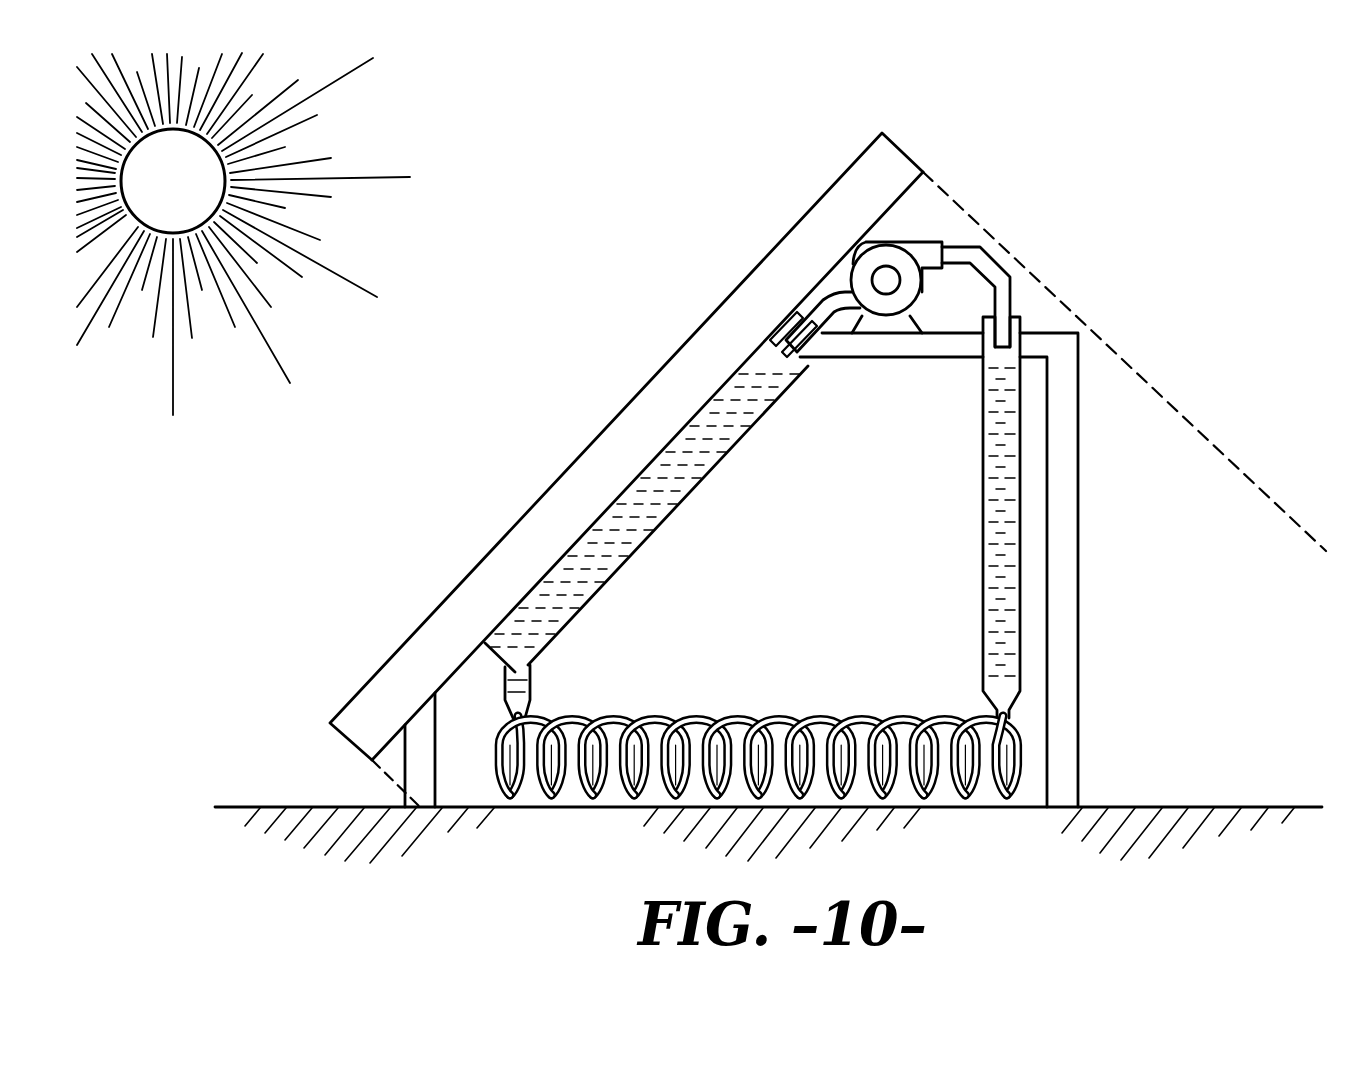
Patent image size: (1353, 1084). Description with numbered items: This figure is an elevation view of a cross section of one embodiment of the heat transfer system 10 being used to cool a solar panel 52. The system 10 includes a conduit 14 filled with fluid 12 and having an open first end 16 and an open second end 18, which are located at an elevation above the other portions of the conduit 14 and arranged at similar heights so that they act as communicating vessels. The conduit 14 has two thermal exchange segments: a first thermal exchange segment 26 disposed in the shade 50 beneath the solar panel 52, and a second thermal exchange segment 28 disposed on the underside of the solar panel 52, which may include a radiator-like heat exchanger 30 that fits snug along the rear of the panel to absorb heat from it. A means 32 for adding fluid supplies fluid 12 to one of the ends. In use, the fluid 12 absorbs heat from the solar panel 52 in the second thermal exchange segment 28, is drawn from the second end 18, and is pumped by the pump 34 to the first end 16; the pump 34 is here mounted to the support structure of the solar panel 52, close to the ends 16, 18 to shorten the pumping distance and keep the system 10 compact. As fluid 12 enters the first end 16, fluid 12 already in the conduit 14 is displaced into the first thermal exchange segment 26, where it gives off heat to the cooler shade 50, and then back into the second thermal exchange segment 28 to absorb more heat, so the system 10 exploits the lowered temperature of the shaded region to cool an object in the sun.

The heat transfer system 10 is at (1157, 208).
The fluid 12 is at (1001, 474).
The conduit 14 is at (693, 717).
The first end 16 is at (1015, 312).
The second end 18 is at (778, 322).
The first thermal exchange segment 26 is at (822, 717).
The second thermal exchange segment 28 is at (560, 603).
The radiator-like heat exchanger 30 is at (738, 446).
The means for adding fluid 32 is at (851, 263).
The pump 34 is at (922, 237).
The shade 50 is at (1155, 445).
The solar panel 52 is at (606, 459).